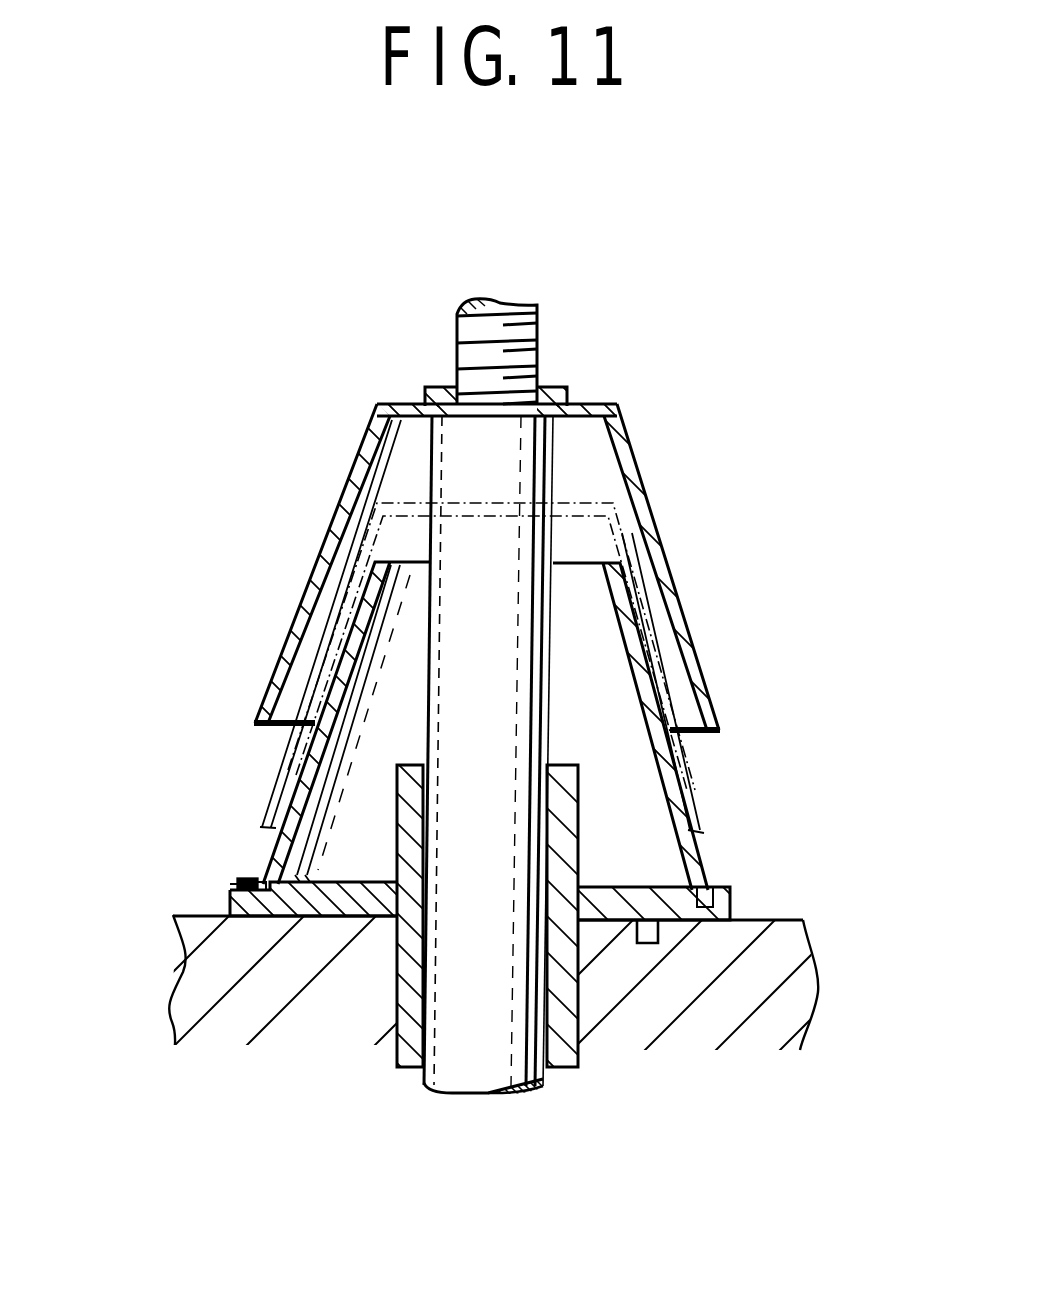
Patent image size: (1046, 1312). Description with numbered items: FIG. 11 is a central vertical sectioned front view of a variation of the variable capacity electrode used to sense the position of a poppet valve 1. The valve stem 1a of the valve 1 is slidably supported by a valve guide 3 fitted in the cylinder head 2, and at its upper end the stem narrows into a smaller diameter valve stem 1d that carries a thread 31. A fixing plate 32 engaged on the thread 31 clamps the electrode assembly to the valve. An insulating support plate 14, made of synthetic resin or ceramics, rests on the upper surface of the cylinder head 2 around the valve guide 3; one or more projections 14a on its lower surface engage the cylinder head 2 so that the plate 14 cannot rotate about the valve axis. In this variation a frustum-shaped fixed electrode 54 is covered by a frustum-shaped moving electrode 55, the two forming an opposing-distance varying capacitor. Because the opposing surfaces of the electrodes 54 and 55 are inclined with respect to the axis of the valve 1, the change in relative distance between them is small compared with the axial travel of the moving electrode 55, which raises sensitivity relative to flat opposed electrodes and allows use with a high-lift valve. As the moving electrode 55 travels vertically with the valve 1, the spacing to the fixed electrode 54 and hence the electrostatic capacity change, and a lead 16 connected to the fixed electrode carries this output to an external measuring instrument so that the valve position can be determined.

The poppet valve 1 is at (400, 1105).
The valve stem 1a is at (547, 1079).
The smaller diameter valve stem 1d is at (569, 348).
The cylinder head 2 is at (198, 985).
The valve guide 3 is at (566, 1015).
The insulating support plate 14 is at (733, 893).
The projection 14a is at (658, 922).
The lead 16 is at (237, 897).
The thread 31 is at (540, 321).
The fixing plate 32 is at (436, 387).
The frustum-shaped fixed electrode 54 is at (275, 806).
The frustum-shaped moving electrode 55 is at (312, 678).